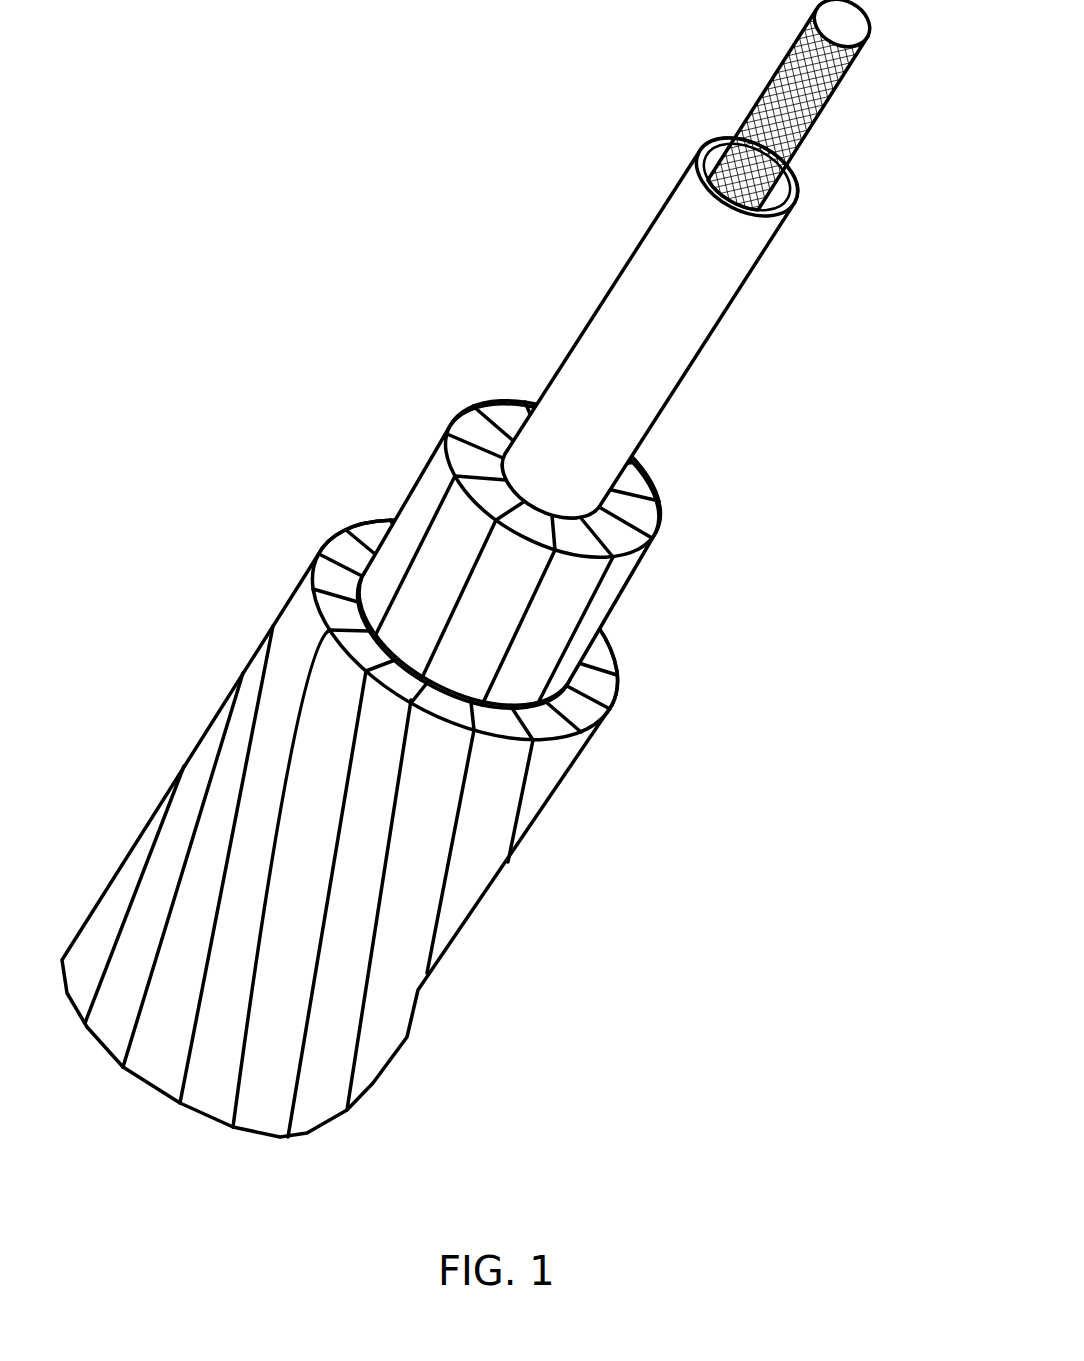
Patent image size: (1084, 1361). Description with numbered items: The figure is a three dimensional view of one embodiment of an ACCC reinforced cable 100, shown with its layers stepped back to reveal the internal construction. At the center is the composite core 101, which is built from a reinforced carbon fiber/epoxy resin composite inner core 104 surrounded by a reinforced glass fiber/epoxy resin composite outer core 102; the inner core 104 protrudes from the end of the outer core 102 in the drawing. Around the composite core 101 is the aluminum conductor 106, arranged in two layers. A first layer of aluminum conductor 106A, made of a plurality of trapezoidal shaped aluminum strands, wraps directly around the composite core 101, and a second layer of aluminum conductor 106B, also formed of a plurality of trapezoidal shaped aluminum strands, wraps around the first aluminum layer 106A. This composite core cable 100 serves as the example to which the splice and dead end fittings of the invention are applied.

The ACCC reinforced cable 100 is at (479, 568).
The composite core 101 is at (709, 259).
The composite outer core 102 is at (738, 298).
The composite inner core 104 is at (833, 100).
The aluminum conductor 106 is at (403, 752).
The first layer of aluminum conductor 106A is at (642, 553).
The second layer of aluminum conductor 106B is at (473, 903).